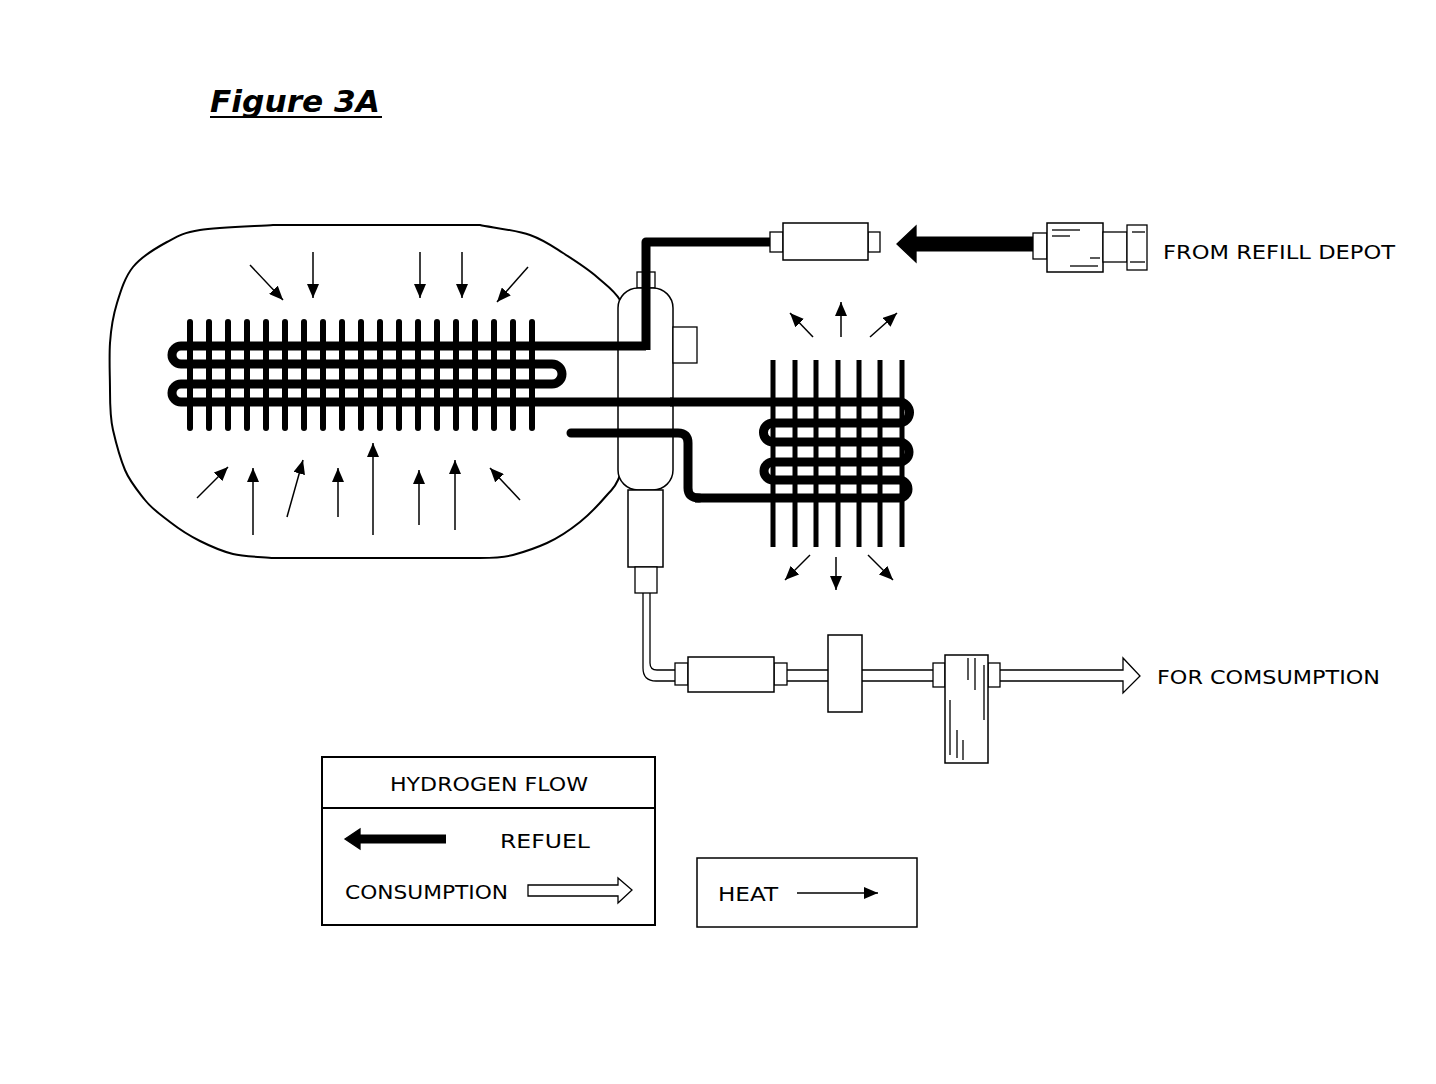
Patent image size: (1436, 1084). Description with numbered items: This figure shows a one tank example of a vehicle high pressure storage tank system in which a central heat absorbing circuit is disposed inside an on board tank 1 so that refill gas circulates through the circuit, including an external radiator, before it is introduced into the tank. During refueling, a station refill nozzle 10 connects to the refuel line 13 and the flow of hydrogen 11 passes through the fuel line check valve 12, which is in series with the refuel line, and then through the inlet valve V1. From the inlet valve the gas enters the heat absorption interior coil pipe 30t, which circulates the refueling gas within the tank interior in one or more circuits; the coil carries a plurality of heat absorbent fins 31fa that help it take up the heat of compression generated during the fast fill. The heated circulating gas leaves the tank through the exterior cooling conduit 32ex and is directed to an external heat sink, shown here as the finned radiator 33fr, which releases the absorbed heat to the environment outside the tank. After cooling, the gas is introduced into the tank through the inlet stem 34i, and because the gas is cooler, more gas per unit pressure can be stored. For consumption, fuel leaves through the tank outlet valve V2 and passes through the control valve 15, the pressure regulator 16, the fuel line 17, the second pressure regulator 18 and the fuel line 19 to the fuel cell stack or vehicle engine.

The on board tank 1 is at (218, 548).
The station refill nozzle 10 is at (1077, 272).
The flow of hydrogen 11 is at (965, 253).
The fuel line check valve 12 is at (826, 223).
The refuel line 13 is at (702, 238).
The control valve 15 is at (732, 692).
The pressure regulator 16 is at (845, 712).
The fuel line 17 is at (902, 670).
The pressure regulator 18 is at (965, 763).
The fuel line 19 is at (1070, 670).
The heat absorption interior coil pipe 30t is at (575, 342).
The heat absorbent fins 31fa is at (363, 320).
The exterior cooling conduit 32ex is at (736, 398).
The finned radiator 33fr is at (917, 388).
The inlet stem 34i is at (590, 440).
The inlet valve V1 is at (685, 327).
The tank outlet valve V2 is at (663, 543).